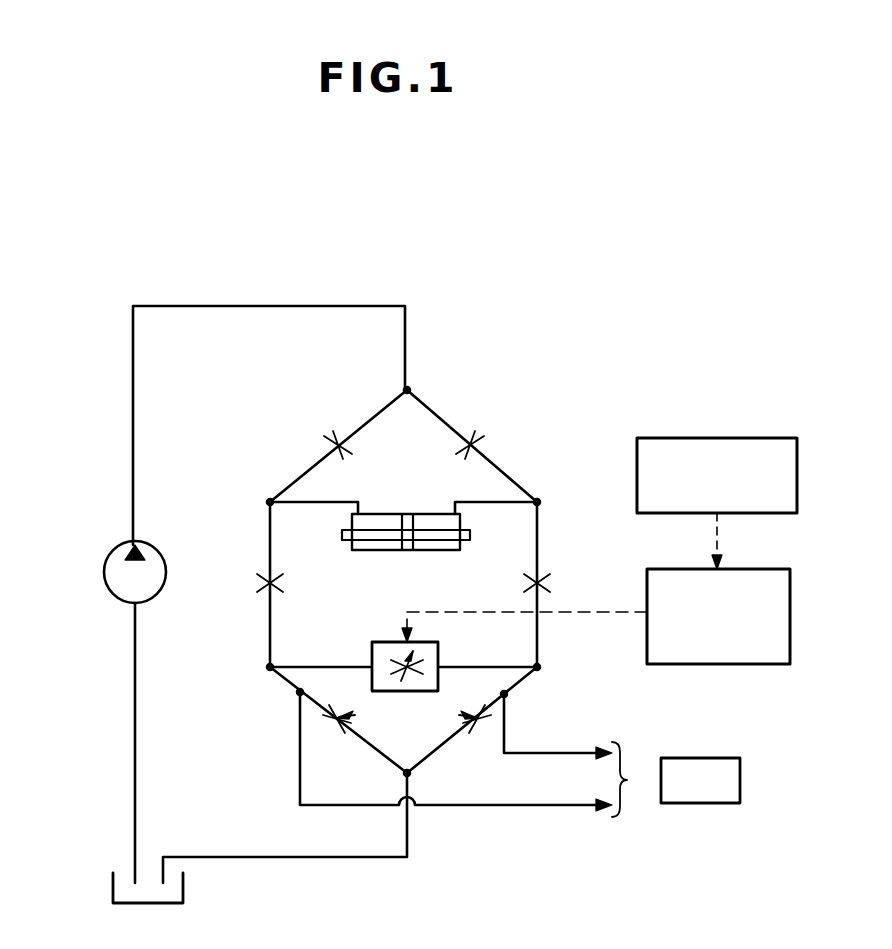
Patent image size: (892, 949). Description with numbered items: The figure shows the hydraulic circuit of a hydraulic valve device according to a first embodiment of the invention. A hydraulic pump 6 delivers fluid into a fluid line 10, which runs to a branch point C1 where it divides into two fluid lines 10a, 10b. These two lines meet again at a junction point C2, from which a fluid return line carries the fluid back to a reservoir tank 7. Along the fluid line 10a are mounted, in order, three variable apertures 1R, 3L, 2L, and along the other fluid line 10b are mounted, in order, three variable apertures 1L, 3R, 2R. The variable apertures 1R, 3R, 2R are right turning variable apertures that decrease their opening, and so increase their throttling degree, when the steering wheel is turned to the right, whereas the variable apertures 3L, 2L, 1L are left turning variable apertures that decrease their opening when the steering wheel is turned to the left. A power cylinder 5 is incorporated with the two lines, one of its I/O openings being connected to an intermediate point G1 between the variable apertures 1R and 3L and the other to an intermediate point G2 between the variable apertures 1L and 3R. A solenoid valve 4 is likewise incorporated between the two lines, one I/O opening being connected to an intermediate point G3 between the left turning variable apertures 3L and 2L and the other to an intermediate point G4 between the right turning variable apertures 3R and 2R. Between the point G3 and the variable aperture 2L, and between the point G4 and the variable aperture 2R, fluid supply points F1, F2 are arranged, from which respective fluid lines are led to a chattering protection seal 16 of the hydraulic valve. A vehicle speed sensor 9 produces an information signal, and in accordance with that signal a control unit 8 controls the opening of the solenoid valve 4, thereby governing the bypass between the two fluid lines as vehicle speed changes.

The fluid line 10 is at (280, 306).
The fluid line 10a is at (384, 408).
The fluid line 10b is at (445, 422).
The branch point C1 is at (411, 391).
The junction point C2 is at (407, 770).
The variable aperture 1R is at (336, 445).
The variable aperture 1L is at (472, 445).
The intermediate point G1 is at (270, 502).
The intermediate point G2 is at (537, 502).
The intermediate point G3 is at (270, 667).
The intermediate point G4 is at (537, 667).
The variable aperture 3L is at (268, 582).
The variable aperture 3R is at (539, 582).
The power cylinder 5 is at (352, 544).
The solenoid valve 4 is at (372, 650).
The fluid supply point F1 is at (300, 692).
The fluid supply point F2 is at (504, 694).
The variable aperture 2L is at (333, 728).
The variable aperture 2R is at (478, 728).
The hydraulic pump 6 is at (118, 562).
The reservoir tank 7 is at (108, 884).
The control unit 8 is at (768, 569).
The vehicle speed sensor 9 is at (764, 438).
The chattering protection seal 16 is at (520, 754).